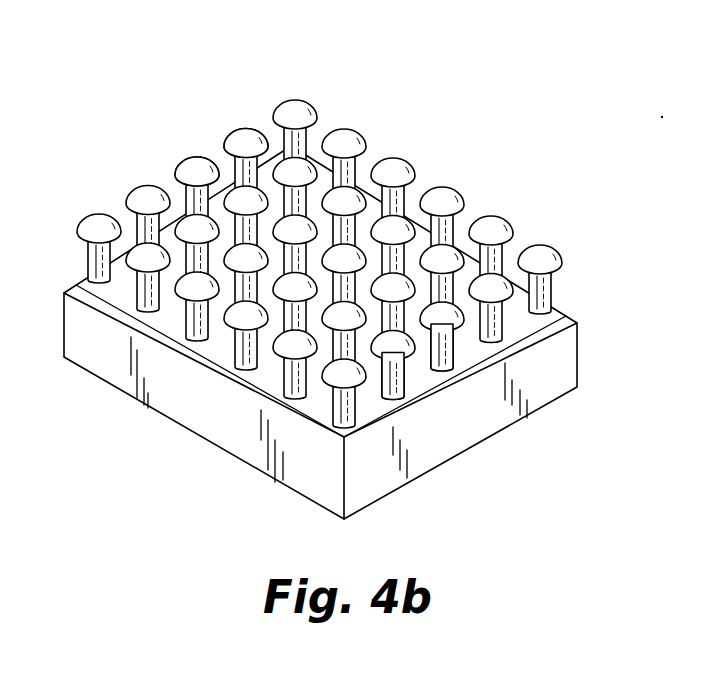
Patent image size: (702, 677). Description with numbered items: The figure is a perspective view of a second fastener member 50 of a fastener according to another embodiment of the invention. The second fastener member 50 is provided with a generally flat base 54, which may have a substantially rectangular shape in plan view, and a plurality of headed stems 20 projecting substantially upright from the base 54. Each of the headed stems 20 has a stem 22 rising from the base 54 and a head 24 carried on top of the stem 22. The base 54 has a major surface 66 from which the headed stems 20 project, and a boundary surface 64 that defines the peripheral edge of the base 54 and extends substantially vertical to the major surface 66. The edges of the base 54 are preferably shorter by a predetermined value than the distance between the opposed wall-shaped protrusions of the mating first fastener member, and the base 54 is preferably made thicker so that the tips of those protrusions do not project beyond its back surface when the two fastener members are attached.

The headed stems 20 is at (352, 133).
The stem 22 is at (436, 358).
The head 24 is at (232, 143).
The second fastener member 50 is at (353, 269).
The base 54 is at (353, 332).
The boundary surface 64 is at (547, 375).
The major surface 66 is at (123, 296).